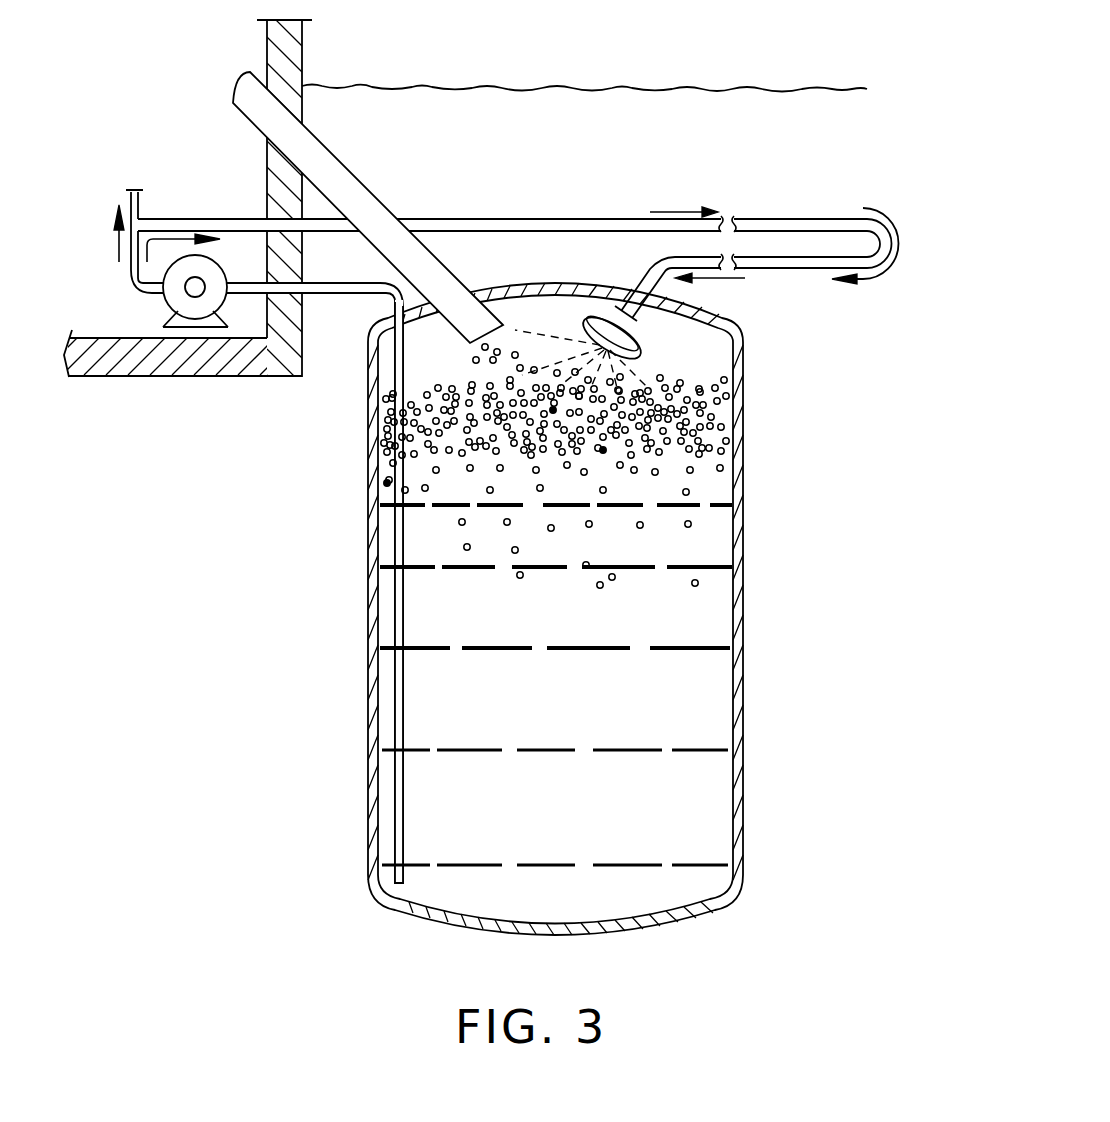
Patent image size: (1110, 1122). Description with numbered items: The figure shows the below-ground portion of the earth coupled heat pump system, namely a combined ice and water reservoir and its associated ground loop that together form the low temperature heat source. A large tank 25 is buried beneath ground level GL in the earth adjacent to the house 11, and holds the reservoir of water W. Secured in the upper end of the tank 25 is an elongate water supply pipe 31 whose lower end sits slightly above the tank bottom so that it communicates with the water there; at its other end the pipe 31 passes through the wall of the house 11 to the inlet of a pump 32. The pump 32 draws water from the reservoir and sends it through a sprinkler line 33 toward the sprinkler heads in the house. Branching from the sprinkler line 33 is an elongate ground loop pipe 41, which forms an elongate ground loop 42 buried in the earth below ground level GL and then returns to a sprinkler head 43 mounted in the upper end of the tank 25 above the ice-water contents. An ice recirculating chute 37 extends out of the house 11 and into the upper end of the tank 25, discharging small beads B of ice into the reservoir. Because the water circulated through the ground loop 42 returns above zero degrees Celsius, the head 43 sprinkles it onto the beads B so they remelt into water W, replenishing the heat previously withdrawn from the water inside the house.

The house 11 is at (302, 62).
The ground level GL is at (523, 87).
The ice recirculating chute 37 is at (365, 190).
The ground loop pipe 41 is at (572, 220).
The ground loop 42 is at (797, 266).
The sprinkler head 43 is at (632, 338).
The sprinkler line 33 is at (131, 274).
The pump 32 is at (166, 304).
The water supply pipe 31 is at (396, 377).
The tank 25 is at (367, 708).
The beads of ice B is at (482, 382).
The water W is at (622, 657).